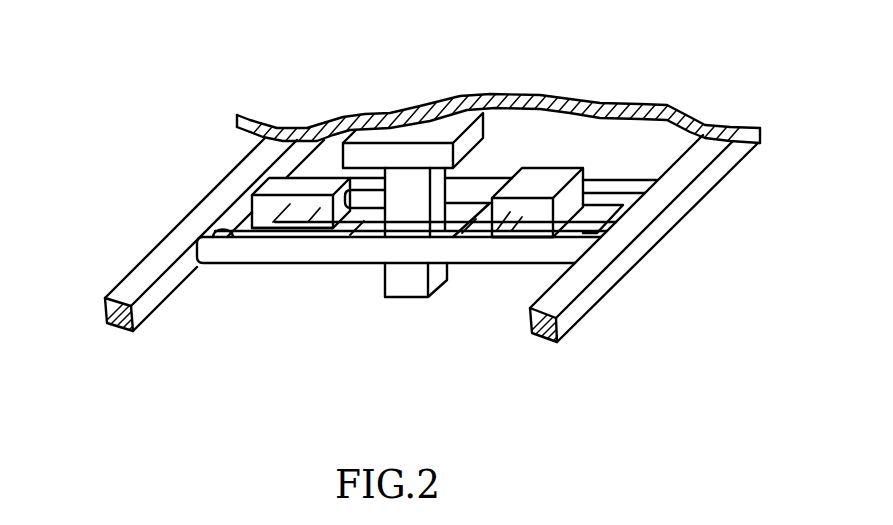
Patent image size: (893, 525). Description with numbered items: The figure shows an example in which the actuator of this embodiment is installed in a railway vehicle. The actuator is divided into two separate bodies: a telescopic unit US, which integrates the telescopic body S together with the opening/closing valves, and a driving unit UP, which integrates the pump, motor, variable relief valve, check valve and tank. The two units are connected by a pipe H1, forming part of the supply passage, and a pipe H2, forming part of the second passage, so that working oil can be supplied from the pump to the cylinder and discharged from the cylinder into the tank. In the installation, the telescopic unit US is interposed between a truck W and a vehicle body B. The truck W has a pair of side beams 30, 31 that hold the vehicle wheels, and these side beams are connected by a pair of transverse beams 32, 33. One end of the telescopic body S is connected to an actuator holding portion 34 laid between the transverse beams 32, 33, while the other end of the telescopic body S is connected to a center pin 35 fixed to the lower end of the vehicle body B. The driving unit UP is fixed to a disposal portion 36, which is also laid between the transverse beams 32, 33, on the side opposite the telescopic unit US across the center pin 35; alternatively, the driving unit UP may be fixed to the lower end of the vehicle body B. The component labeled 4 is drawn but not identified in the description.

The vehicle body B is at (607, 93).
The truck W is at (129, 269).
The side beam 30 is at (182, 217).
The side beam 31 is at (637, 240).
The transverse beam 32 is at (588, 250).
The transverse beam 33 is at (650, 181).
The actuator holding portion 34 is at (217, 250).
The center pin 35 is at (400, 180).
The disposal portion 36 is at (676, 222).
The connector 4 is at (362, 193).
The telescopic body S is at (322, 171).
The telescopic unit US is at (252, 184).
The driving unit UP is at (541, 176).
The pipe H1 is at (513, 240).
The pipe H2 is at (268, 240).